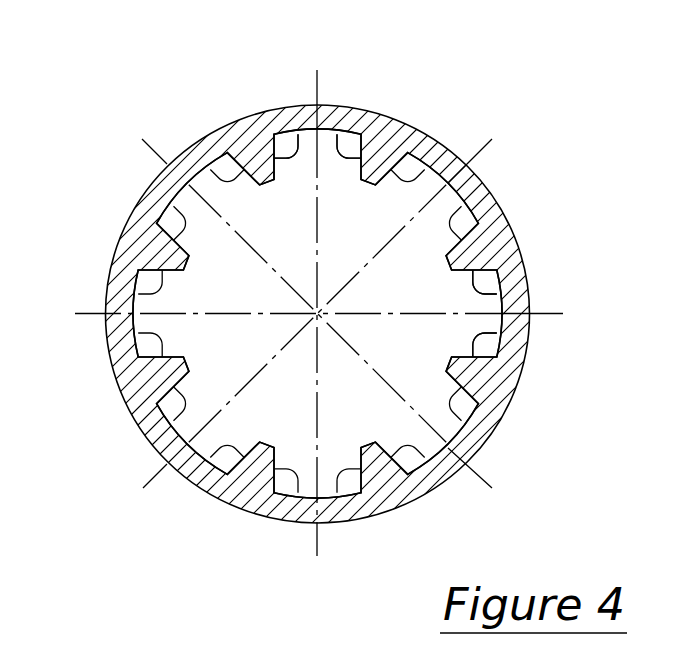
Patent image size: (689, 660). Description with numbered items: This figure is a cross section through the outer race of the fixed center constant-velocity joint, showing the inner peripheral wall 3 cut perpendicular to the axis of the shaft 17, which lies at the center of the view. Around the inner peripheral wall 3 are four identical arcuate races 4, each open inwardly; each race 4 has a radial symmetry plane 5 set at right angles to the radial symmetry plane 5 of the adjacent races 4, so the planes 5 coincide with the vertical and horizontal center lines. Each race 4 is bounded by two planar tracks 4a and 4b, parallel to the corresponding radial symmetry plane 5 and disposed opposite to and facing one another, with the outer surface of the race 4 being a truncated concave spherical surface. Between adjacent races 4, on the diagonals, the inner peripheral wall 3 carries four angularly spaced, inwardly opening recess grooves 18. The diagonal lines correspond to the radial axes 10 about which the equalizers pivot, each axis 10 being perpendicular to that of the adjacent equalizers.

The inner peripheral wall 3 is at (507, 218).
The arcuate race 4 is at (295, 107).
The track 4a is at (263, 108).
The track 4b is at (348, 108).
The radial symmetry plane 5 is at (316, 83).
The radial axis 10 is at (530, 157).
The axis of the shaft 17 is at (319, 311).
The recess groove 18 is at (217, 170).